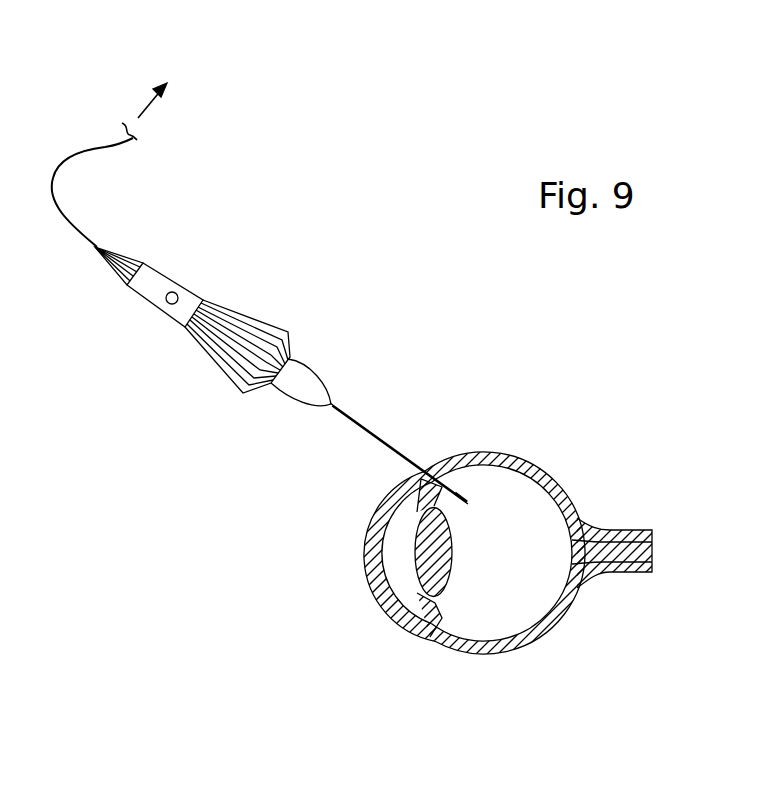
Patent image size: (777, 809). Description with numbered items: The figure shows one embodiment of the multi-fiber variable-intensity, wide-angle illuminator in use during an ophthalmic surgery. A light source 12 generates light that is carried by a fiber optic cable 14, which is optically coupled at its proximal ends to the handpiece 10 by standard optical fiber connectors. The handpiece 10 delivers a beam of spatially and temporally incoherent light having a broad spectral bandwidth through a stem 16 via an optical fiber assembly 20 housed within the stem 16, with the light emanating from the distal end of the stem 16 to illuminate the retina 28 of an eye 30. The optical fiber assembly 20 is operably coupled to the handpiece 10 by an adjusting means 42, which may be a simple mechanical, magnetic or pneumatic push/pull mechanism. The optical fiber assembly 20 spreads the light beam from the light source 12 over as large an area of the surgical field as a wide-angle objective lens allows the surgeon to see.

The handpiece 10 is at (232, 325).
The light source 12 is at (167, 84).
The fiber optic cable 14 is at (55, 205).
The stem 16 is at (377, 438).
The optical fiber assembly 20 is at (469, 503).
The retina 28 is at (543, 497).
The eye 30 is at (458, 511).
The adjusting means 42 is at (178, 295).